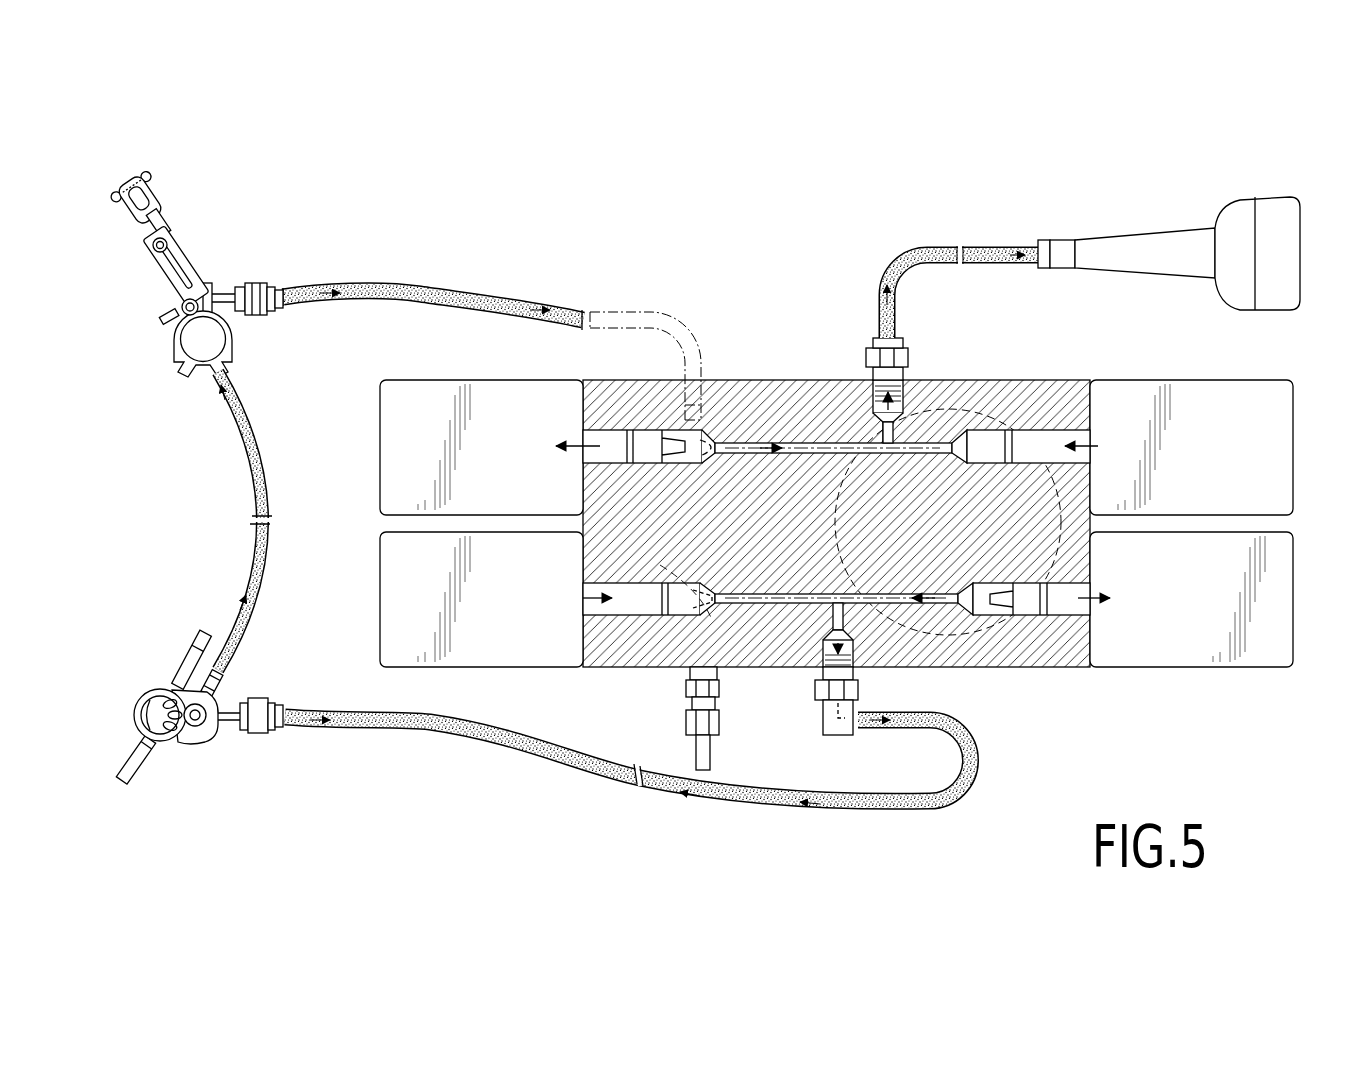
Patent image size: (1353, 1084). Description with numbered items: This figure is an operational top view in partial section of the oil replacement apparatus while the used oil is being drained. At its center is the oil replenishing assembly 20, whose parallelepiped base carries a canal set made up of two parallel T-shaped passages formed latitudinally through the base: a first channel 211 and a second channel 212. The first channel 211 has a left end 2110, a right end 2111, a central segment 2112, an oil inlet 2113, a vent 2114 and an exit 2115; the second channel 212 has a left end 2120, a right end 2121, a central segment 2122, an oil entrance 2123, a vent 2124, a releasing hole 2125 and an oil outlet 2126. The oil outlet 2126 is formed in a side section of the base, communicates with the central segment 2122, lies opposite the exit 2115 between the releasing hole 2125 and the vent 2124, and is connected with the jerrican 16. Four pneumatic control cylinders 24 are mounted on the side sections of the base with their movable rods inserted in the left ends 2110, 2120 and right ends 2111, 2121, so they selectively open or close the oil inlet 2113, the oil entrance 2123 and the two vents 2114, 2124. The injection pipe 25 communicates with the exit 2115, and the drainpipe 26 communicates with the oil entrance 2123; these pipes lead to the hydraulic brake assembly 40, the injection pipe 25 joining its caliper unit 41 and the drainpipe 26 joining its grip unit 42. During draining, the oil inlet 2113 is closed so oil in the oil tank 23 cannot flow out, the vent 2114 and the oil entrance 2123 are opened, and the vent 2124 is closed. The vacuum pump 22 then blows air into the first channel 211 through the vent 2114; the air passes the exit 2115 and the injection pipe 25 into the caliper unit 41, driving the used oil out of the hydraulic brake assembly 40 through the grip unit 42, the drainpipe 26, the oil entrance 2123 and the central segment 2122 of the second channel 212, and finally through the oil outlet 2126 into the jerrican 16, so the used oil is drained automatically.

The jerrican 16 is at (1182, 243).
The oil replenishing assembly 20 is at (716, 296).
The vacuum pump 22 is at (835, 545).
The oil tank 23 is at (667, 563).
The control cylinders 24 is at (1200, 393).
The injection pipe 25 is at (503, 750).
The drainpipe 26 is at (415, 293).
The hydraulic brake assembly 40 is at (212, 492).
The caliper unit 41 is at (155, 738).
The grip unit 42 is at (190, 270).
The first channel 211 is at (580, 612).
The second channel 212 is at (582, 436).
The left end 2110 is at (602, 586).
The right end 2111 is at (1088, 612).
The central segment 2112 is at (778, 603).
The oil inlet 2113 is at (695, 605).
The vent 2114 is at (968, 590).
The exit 2115 is at (847, 640).
The left end 2120 is at (600, 464).
The right end 2121 is at (990, 445).
The central segment 2122 is at (857, 445).
The oil entrance 2123 is at (712, 462).
The vent 2124 is at (985, 465).
The releasing hole 2125 is at (770, 438).
The oil outlet 2126 is at (890, 455).